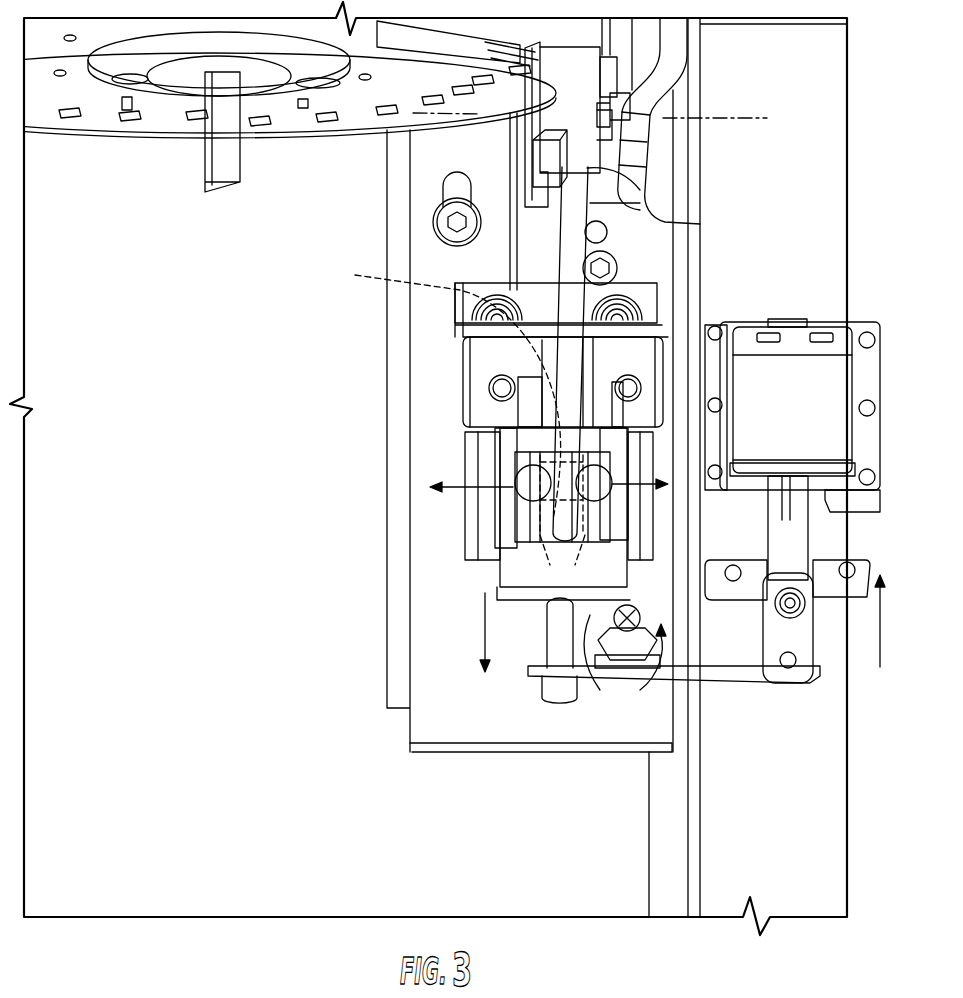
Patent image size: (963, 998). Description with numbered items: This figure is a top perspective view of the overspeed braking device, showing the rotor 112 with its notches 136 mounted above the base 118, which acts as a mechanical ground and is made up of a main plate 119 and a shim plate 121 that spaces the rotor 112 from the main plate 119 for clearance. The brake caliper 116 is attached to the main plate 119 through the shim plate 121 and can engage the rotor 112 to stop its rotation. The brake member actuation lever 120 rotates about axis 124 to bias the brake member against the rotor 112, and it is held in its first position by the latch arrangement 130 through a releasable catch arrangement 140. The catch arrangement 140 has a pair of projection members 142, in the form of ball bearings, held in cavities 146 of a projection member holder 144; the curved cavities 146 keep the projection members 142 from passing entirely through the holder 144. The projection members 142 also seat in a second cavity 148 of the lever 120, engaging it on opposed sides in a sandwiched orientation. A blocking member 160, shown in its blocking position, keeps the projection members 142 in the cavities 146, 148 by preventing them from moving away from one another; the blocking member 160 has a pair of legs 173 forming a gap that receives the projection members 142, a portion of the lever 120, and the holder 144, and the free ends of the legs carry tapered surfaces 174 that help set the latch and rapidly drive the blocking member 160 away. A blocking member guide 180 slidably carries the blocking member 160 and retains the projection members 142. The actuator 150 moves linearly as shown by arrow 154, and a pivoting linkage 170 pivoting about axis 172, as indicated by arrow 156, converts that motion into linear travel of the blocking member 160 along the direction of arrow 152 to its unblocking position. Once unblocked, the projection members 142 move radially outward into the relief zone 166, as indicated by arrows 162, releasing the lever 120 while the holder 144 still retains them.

The rotor 112 is at (303, 125).
The brake caliper 116 is at (587, 153).
The base 118 is at (828, 733).
The main plate 119 is at (612, 843).
The brake member actuation lever 120 is at (578, 217).
The shim plate 121 is at (398, 675).
The axis 124 is at (730, 117).
The latch arrangement 130 is at (588, 733).
The notches 136 is at (265, 122).
The catch arrangement 140 is at (500, 545).
The projection members 142 is at (497, 430).
The projection member holder 144 is at (537, 508).
The cavities 146 is at (560, 573).
The second cavity 148 is at (452, 413).
The actuator 150 is at (826, 405).
The arrow 152 is at (483, 627).
The arrow 154 is at (880, 620).
The arrow 156 is at (663, 657).
The blocking member 160 is at (515, 477).
The arrows 162 is at (468, 487).
The relief zone 166 is at (505, 432).
The pivoting linkage 170 is at (755, 742).
The axis 172 is at (628, 597).
The legs 173 is at (480, 545).
The tapered surfaces 174 is at (508, 435).
The blocking member guide 180 is at (512, 520).